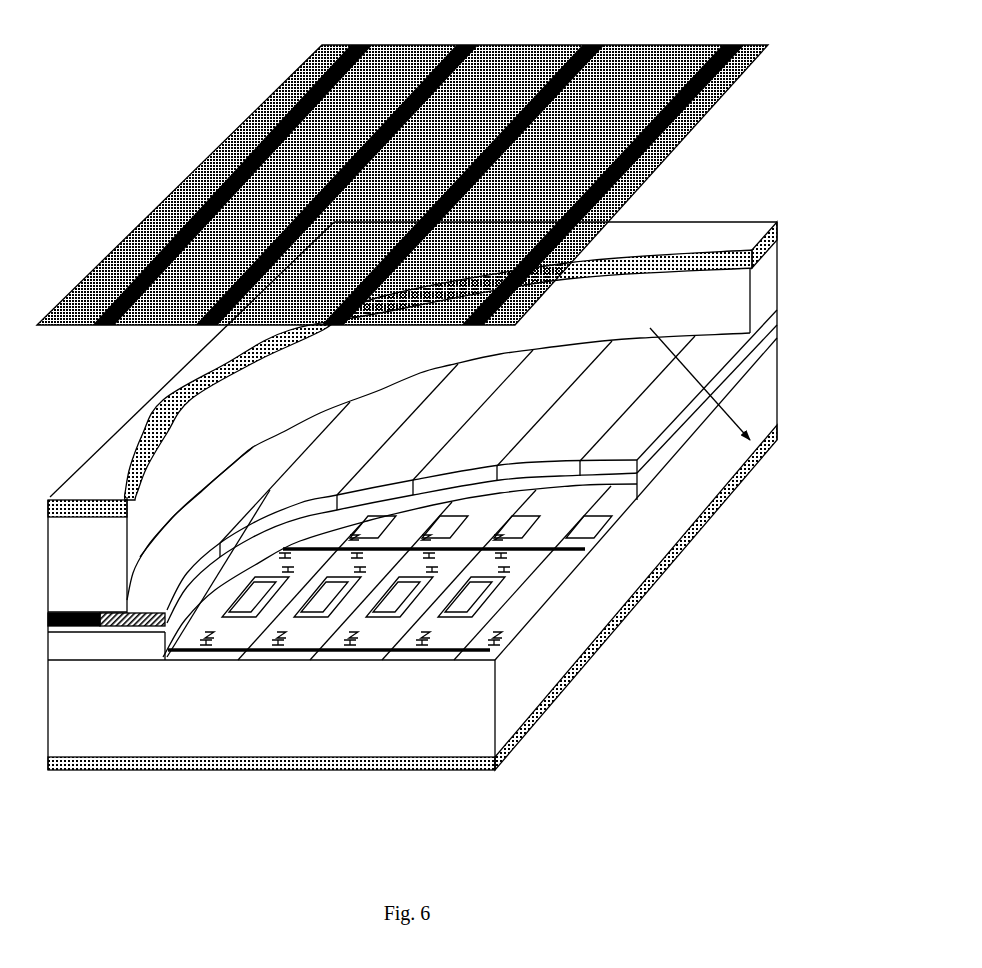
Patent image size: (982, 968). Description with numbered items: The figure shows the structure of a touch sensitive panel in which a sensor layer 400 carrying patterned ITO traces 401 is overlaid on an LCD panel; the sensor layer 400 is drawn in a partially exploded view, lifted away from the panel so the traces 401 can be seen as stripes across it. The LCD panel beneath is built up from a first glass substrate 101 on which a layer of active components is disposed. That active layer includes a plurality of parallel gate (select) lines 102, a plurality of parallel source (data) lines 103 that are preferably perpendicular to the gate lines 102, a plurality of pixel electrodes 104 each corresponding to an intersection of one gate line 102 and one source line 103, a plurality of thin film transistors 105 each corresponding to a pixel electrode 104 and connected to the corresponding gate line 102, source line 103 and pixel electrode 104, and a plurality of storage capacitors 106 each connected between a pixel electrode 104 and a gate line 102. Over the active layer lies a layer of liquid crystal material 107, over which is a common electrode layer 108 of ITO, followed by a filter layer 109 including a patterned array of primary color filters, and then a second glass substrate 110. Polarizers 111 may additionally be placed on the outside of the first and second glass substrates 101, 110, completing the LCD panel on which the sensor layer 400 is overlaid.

The sensor layer 400 is at (290, 76).
The patterned ITO traces 401 is at (162, 240).
The first glass substrate 101 is at (412, 496).
The gate lines 102 is at (572, 569).
The source lines 103 is at (442, 670).
The pixel electrodes 104 is at (519, 612).
The thin film transistors 105 is at (359, 642).
The storage capacitors 106 is at (547, 540).
The liquid crystal material layer 107 is at (615, 489).
The common electrode layer 108 is at (138, 642).
The filter layer 109 is at (83, 628).
The second glass substrate 110 is at (87, 555).
The polarizers 111 is at (676, 274).